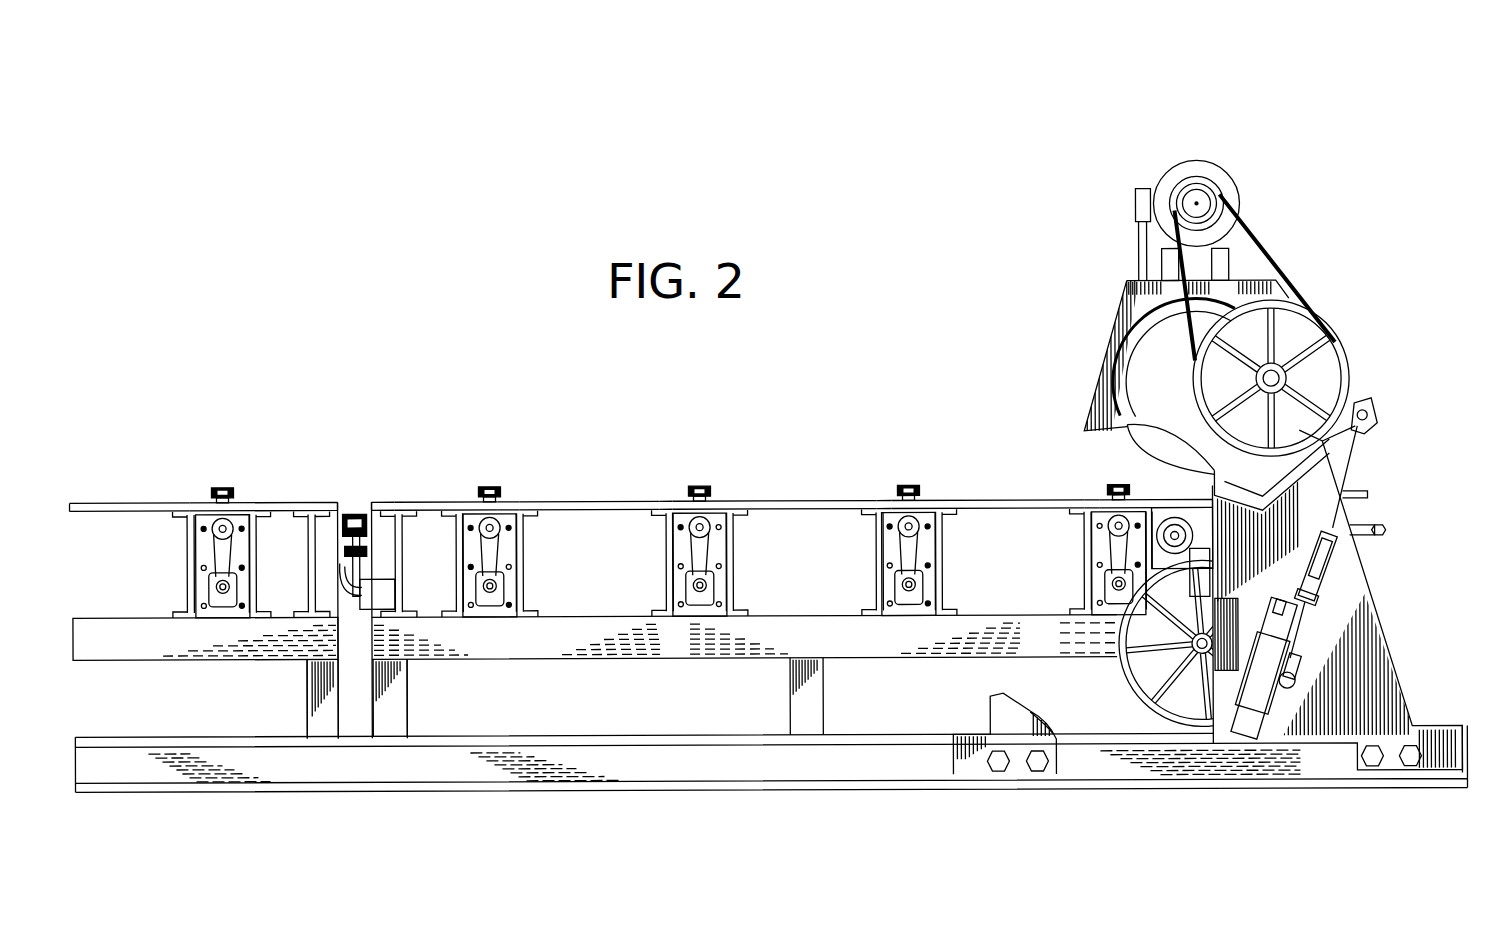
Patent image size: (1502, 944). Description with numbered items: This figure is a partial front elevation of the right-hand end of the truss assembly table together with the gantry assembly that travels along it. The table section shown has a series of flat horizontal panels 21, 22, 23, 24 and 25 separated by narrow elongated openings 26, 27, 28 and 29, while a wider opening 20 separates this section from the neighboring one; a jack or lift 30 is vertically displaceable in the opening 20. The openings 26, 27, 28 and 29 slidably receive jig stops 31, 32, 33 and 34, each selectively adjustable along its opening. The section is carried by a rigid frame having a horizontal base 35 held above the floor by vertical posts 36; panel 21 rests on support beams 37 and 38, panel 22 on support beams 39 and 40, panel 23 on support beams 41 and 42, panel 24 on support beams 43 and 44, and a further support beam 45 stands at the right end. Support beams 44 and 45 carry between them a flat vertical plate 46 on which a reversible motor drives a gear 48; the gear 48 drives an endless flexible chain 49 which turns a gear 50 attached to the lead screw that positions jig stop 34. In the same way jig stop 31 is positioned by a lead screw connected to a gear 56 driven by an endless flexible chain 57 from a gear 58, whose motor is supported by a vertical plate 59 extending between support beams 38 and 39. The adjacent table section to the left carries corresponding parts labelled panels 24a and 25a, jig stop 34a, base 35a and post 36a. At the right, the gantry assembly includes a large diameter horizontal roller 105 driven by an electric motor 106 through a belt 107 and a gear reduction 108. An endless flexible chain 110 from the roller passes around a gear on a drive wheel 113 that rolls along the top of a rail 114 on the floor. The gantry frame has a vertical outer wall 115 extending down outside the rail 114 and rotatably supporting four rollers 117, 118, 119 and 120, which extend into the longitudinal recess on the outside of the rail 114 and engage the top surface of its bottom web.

The elongated opening 20 is at (373, 506).
The flat horizontal panel 21 is at (418, 501).
The flat horizontal panel 22 is at (603, 501).
The flat horizontal panel 23 is at (788, 501).
The flat horizontal panel 24 is at (980, 501).
The rail section 24a is at (122, 500).
The flat horizontal panel 25 is at (1147, 501).
The rail section 25a is at (284, 500).
The elongated opening 26 is at (503, 500).
The elongated opening 27 is at (682, 500).
The elongated opening 28 is at (893, 500).
The elongated opening 29 is at (1100, 500).
The jack or lift 30 is at (353, 503).
The jig stop 31 is at (512, 542).
The jig stop 32 is at (702, 486).
The jig stop 33 is at (911, 486).
The jig stop 34 is at (1084, 545).
The clamp assembly 34a is at (225, 485).
The horizontal base 35 is at (637, 651).
The support beam 35a is at (188, 651).
The vertical posts 36 is at (408, 697).
The post 36a is at (309, 690).
The support beam 37 is at (403, 549).
The support beam 38 is at (462, 559).
The support beam 39 is at (524, 553).
The support beam 40 is at (668, 549).
The support beam 41 is at (735, 553).
The support beam 42 is at (877, 549).
The support beam 43 is at (943, 553).
The support beam 44 is at (1085, 559).
The support beam 45 is at (1172, 567).
The flat vertical plate 46 is at (1097, 582).
The gear 48 is at (1112, 594).
The endless flexible chain 49 is at (1108, 542).
The gear 50 is at (1106, 522).
The gear 56 is at (501, 528).
The endless flexible chain 57 is at (505, 560).
The gear 58 is at (478, 605).
The vertical plate 59 is at (518, 607).
The horizontal roller 105 is at (1150, 447).
The electric motor 106 is at (1188, 167).
The belt 107 is at (1270, 250).
The gear reduction 108 is at (1148, 358).
The endless flexible chain 110 is at (1193, 526).
The drive wheel 113 is at (1131, 684).
The rail 114 is at (618, 775).
The vertical outer wall 115 is at (1380, 643).
The roller 117 is at (991, 778).
The roller 118 is at (1041, 778).
The roller 119 is at (1364, 774).
The roller 120 is at (1411, 774).